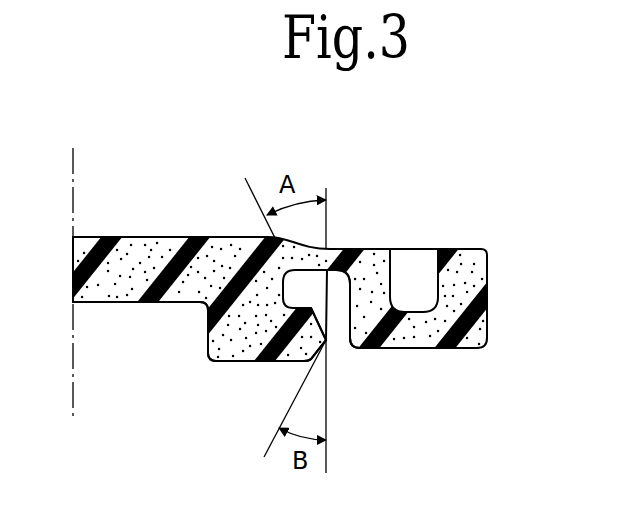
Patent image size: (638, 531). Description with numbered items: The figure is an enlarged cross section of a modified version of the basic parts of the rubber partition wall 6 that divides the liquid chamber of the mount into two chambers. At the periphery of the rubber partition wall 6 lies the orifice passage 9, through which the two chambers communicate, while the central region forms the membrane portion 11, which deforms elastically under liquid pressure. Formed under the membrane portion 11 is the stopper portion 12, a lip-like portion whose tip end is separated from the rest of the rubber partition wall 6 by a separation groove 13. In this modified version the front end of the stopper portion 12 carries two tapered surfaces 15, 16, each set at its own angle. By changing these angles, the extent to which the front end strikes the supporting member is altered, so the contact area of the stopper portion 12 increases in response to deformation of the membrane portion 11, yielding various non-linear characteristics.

The rubber partition wall 6 is at (179, 198).
The orifice passage 9 is at (415, 262).
The membrane portion 11 is at (137, 237).
The stopper portion 12 is at (235, 360).
The separation groove 13 is at (336, 298).
The tapered surface 15 is at (329, 292).
The tapered surface 16 is at (320, 348).